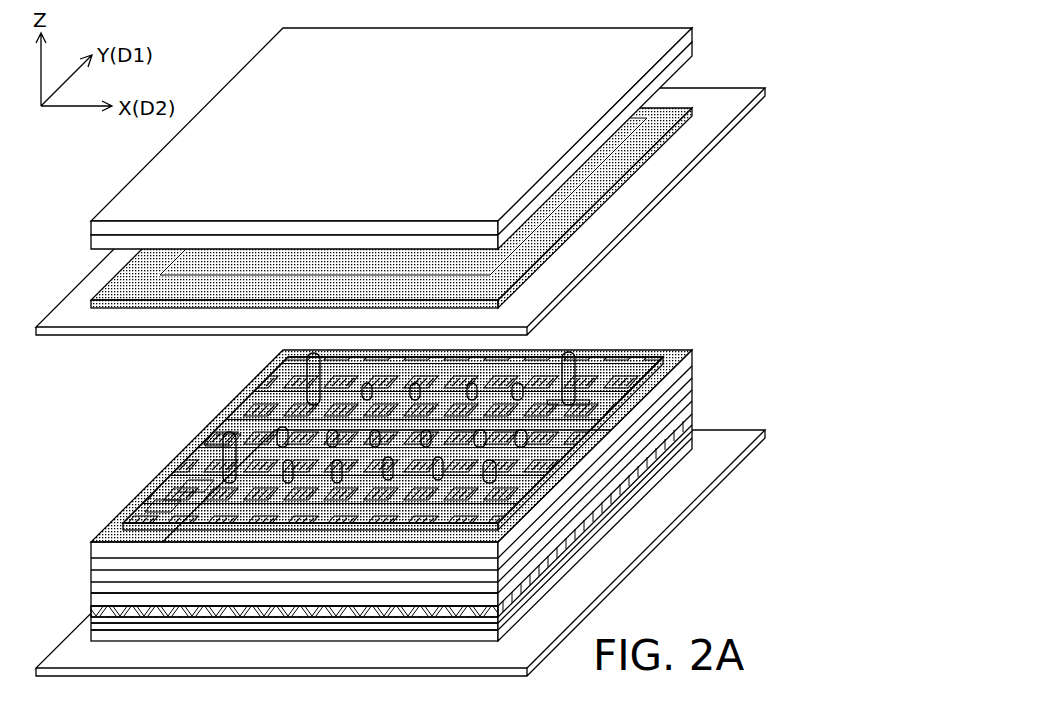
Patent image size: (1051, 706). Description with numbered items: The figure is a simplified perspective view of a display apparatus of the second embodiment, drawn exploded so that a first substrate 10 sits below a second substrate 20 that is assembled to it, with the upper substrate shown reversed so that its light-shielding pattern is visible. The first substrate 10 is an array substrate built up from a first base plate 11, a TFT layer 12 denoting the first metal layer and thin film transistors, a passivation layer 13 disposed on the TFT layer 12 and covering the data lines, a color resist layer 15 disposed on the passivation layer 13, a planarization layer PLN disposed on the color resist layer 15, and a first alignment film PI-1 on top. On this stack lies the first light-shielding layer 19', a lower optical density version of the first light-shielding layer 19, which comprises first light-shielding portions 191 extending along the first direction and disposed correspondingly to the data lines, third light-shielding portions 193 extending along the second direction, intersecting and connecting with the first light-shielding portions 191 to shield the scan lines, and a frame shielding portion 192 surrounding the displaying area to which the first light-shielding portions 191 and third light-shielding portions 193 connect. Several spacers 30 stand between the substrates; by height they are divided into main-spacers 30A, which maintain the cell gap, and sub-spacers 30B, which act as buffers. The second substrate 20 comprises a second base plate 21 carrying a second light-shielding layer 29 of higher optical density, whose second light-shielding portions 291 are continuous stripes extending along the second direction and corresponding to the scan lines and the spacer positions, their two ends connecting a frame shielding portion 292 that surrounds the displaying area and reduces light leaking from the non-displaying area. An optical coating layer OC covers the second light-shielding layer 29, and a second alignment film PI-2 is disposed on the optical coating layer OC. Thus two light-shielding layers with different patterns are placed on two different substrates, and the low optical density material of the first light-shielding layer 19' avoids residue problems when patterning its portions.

The first substrate 10 is at (762, 333).
The first base plate 11 is at (75, 653).
The TFT layer 12 is at (100, 625).
The passivation layer 13 is at (92, 620).
The color resist layer 15 is at (91, 607).
The planarization layer PLN is at (692, 418).
The first alignment film PI-1 is at (692, 352).
The first light-shielding layer 19 is at (383, 442).
The first light-shielding portions 191 is at (179, 487).
The frame shielding portion 192 is at (152, 507).
The third light-shielding portions 193 is at (213, 450).
The first light-shielding layer 19' is at (677, 348).
The spacers 30 is at (462, 357).
The main-spacers 30A is at (570, 350).
The sub-spacers 30B is at (545, 365).
The second substrate 20 is at (762, 17).
The second base plate 21 is at (673, 178).
The second light-shielding layer 29 is at (362, 256).
The second light-shielding portions 291 is at (243, 262).
The frame shielding portion 292 is at (143, 292).
The optical coating layer OC is at (692, 50).
The second alignment film PI-2 is at (692, 30).